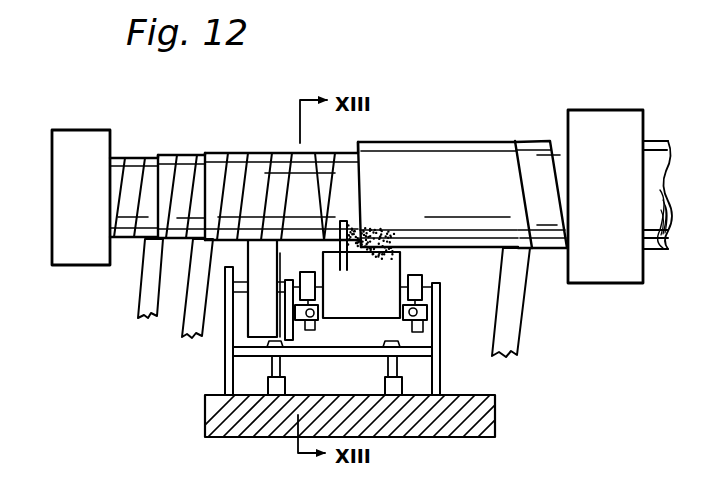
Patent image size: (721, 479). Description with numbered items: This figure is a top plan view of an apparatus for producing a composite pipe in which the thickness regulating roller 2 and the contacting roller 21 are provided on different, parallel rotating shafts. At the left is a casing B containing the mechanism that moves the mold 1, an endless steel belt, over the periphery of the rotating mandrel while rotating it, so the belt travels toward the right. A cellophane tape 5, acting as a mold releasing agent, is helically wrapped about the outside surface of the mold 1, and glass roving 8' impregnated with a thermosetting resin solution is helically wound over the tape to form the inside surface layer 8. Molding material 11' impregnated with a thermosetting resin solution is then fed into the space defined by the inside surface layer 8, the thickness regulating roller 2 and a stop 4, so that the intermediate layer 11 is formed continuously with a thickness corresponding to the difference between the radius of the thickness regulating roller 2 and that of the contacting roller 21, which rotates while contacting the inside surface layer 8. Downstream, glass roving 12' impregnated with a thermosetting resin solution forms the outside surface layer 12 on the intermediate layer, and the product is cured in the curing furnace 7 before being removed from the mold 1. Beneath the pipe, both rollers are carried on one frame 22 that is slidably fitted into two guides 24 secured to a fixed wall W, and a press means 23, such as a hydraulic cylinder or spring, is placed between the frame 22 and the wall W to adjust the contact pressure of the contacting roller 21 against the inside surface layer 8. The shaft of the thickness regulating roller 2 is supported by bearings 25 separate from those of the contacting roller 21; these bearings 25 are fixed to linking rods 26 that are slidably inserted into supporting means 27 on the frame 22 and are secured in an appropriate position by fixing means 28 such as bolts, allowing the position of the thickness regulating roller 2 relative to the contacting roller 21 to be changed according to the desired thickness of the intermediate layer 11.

The mold 1 is at (136, 157).
The casing B is at (53, 239).
The inside surface layer 8 is at (234, 196).
The intermediate layer 11 is at (438, 194).
The outside surface layer 12 is at (540, 194).
The curing furnace 7 is at (628, 284).
The cellophane tape 5 is at (143, 320).
The glass roving 8' is at (190, 311).
The glass roving 12' is at (519, 323).
The stop 4 is at (337, 222).
The molding material 11' is at (383, 225).
The guides 24 is at (225, 367).
The frame 22 is at (366, 351).
The contacting roller 21 is at (273, 303).
The thickness regulating roller 2 is at (369, 305).
The bearings 25 is at (312, 262).
The supporting means 27 is at (318, 317).
The linking rods 26 is at (314, 315).
The fixing means 28 is at (313, 330).
The press means 23 is at (266, 390).
The wall W is at (452, 429).